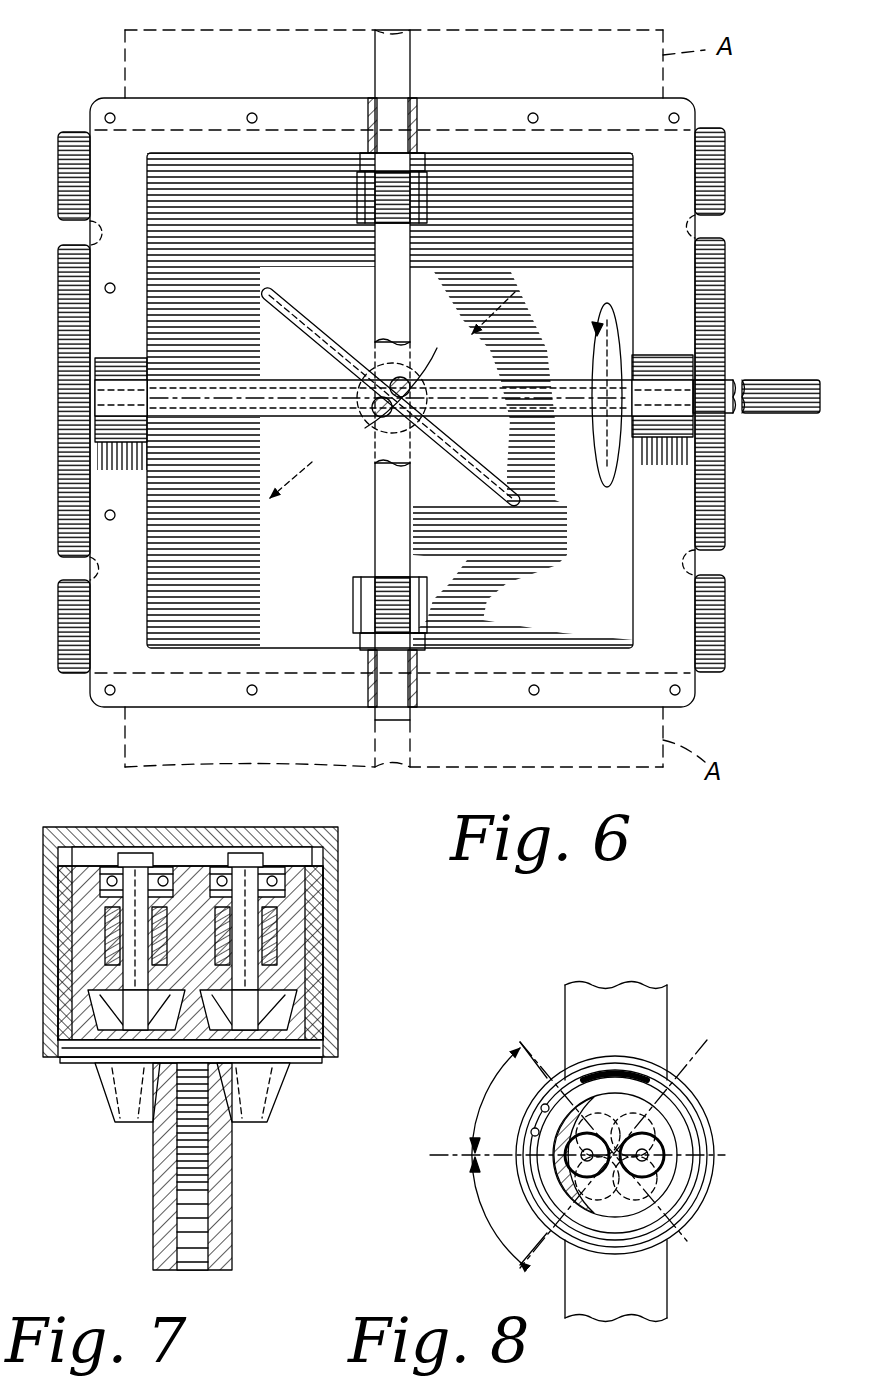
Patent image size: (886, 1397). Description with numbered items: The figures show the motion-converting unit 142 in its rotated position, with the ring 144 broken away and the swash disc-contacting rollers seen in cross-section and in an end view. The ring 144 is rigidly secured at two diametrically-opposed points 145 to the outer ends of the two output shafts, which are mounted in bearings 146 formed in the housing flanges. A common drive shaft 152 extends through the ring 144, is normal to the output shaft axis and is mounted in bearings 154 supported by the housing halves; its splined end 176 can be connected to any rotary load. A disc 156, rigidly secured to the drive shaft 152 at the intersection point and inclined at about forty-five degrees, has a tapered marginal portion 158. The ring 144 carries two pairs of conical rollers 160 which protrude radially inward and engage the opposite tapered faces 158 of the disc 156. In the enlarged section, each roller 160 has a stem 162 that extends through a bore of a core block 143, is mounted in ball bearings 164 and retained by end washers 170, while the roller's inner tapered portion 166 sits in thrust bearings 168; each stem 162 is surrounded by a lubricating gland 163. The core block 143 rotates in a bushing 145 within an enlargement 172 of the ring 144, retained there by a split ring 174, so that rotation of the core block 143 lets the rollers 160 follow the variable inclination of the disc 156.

In FIG. 6, the motion-converting unit 142 is at (745, 170).
In FIG. 7, the core block 143 is at (325, 965).
In FIG. 6, the ring 144 is at (377, 292).
In FIG. 7, the ring 144 is at (310, 918).
In FIG. 6, the securing point / bushing 145 is at (360, 200).
In FIG. 6, the bearing 146 is at (415, 112).
In FIG. 6, the common drive shaft 152 is at (283, 398).
In FIG. 6, the bearing 154 is at (687, 378).
In FIG. 6, the disc 156 is at (507, 477).
In FIG. 7, the disc 156 is at (232, 1180).
In FIG. 7, the tapered marginal portion 158 is at (208, 1212).
In FIG. 6, the roller 160 is at (407, 375).
In FIG. 7, the roller 160 is at (255, 1078).
In FIG. 8, the roller 160 is at (575, 1168).
In FIG. 7, the stem 162 is at (137, 1010).
In FIG. 7, the lubricating gland 163 is at (165, 905).
In FIG. 7, the ball bearing 164 is at (330, 882).
In FIG. 7, the inner tapered portion 166 is at (290, 1040).
In FIG. 7, the thrust bearing 168 is at (340, 990).
In FIG. 7, the end washer 170 is at (268, 880).
In FIG. 7, the enlargement 172 is at (112, 852).
In FIG. 7, the split ring 174 is at (80, 1050).
In FIG. 8, the split ring 174 is at (530, 1135).
In FIG. 6, the splined end 176 is at (795, 383).